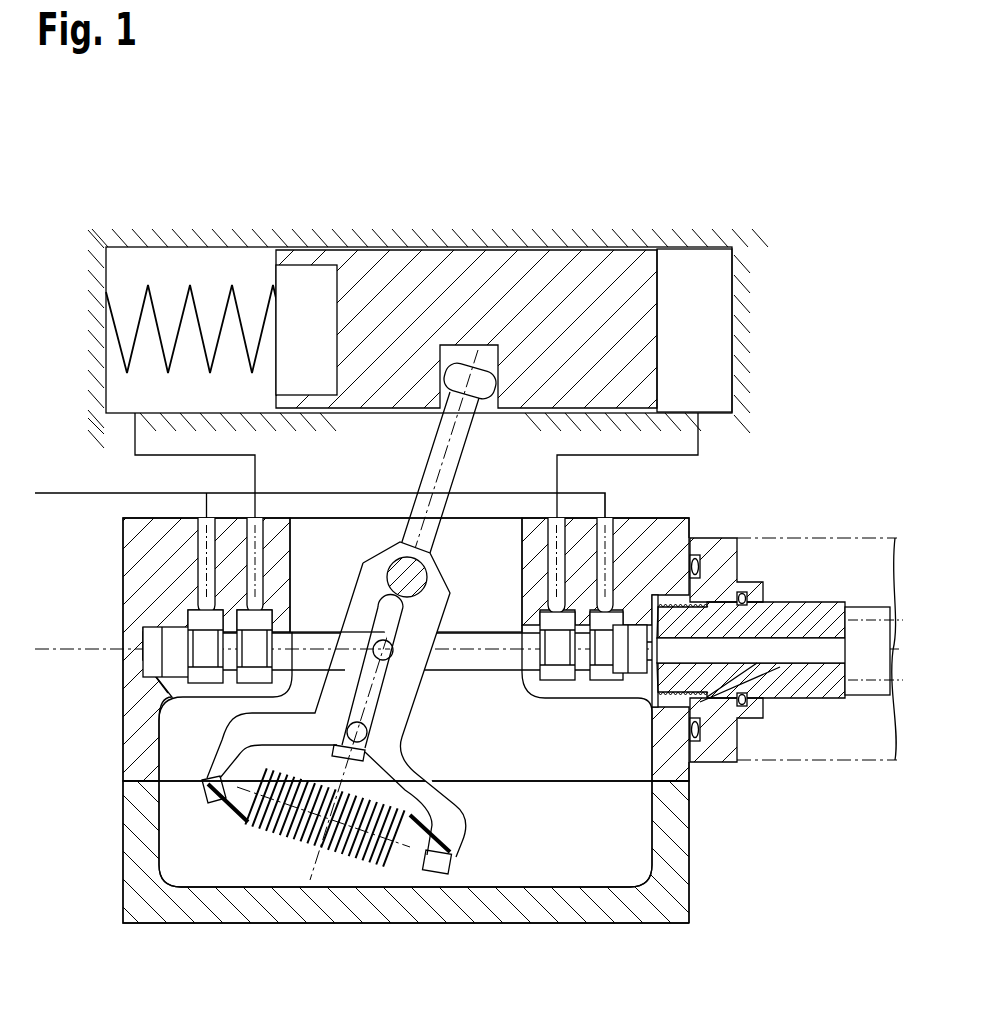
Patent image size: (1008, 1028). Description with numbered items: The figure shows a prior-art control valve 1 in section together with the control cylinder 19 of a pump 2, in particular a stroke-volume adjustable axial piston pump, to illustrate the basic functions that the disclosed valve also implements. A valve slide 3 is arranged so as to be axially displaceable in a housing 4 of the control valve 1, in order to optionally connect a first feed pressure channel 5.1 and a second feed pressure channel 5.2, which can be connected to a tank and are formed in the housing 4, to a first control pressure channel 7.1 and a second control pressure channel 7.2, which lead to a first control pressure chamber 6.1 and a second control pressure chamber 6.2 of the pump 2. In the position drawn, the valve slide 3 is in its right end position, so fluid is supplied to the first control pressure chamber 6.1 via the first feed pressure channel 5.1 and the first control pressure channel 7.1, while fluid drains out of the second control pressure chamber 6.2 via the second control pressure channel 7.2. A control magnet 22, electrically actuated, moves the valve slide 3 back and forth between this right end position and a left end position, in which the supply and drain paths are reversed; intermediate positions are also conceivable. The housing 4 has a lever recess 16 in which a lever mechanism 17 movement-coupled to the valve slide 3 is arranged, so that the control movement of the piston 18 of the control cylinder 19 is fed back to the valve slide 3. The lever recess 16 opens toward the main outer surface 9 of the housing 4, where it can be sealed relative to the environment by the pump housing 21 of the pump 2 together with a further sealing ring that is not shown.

The control valve 1 is at (722, 489).
The pump 2 is at (828, 290).
The valve slide 3 is at (173, 657).
The housing 4 is at (130, 766).
The first feed pressure channel 5.1 is at (203, 563).
The second feed pressure channel 5.2 is at (610, 540).
The first control pressure chamber 6.1 is at (135, 265).
The second control pressure chamber 6.2 is at (708, 265).
The first control pressure channel 7.1 is at (250, 527).
The second control pressure channel 7.2 is at (562, 525).
The main outer surface 9 is at (138, 516).
The lever recess 16 is at (328, 538).
The lever mechanism 17 is at (472, 753).
The piston 18 is at (422, 265).
The control cylinder 19 is at (792, 262).
The pump housing 21 is at (92, 376).
The control magnet 22 is at (872, 683).